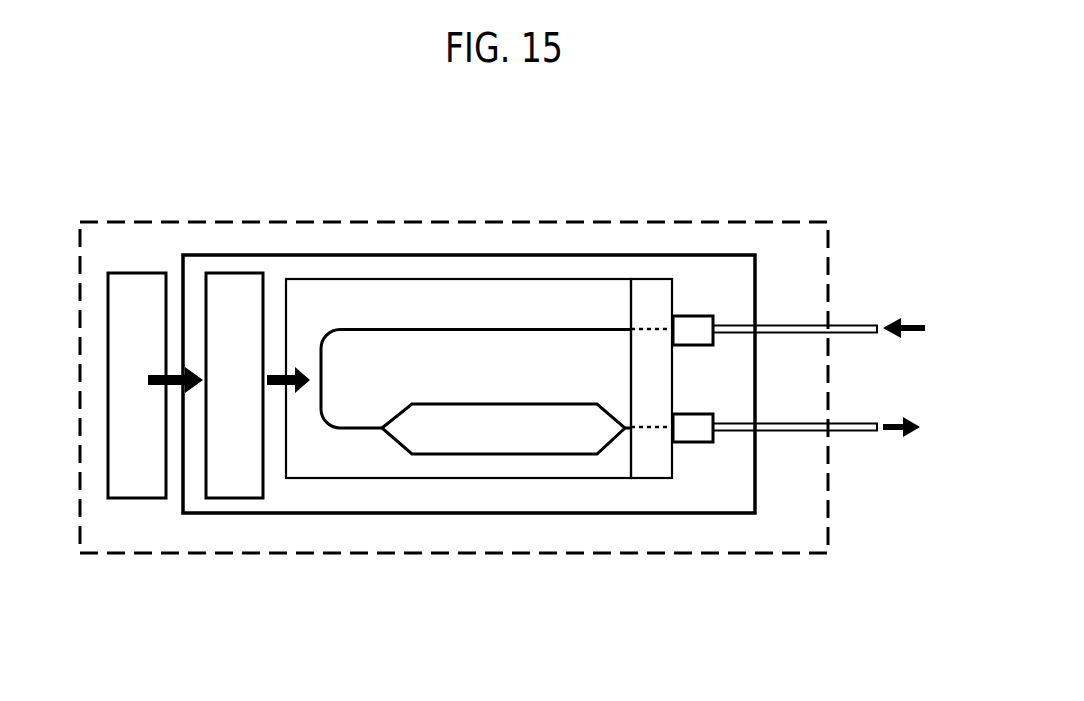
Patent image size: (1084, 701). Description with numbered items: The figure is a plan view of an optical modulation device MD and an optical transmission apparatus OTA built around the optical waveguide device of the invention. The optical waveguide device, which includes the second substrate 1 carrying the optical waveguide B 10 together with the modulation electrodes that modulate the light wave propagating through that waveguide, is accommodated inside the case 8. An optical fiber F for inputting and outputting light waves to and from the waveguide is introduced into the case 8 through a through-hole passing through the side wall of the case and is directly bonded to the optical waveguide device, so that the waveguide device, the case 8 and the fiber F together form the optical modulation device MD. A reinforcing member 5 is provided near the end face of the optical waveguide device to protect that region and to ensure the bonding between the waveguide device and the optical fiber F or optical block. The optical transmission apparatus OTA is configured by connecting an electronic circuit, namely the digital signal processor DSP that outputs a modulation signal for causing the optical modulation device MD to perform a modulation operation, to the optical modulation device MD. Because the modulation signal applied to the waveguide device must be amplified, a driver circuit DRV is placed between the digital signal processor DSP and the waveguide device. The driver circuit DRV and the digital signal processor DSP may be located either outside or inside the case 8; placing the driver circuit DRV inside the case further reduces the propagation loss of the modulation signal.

The second substrate 1 is at (432, 295).
The case 8 is at (469, 402).
The optical waveguide B 10 is at (538, 455).
The reinforcing member 5 is at (657, 468).
The digital signal processor DSP is at (133, 275).
The driver circuit DRV is at (230, 275).
The optical modulation device MD is at (437, 513).
The optical transmission apparatus OTA is at (238, 553).
The optical fiber F is at (805, 323).